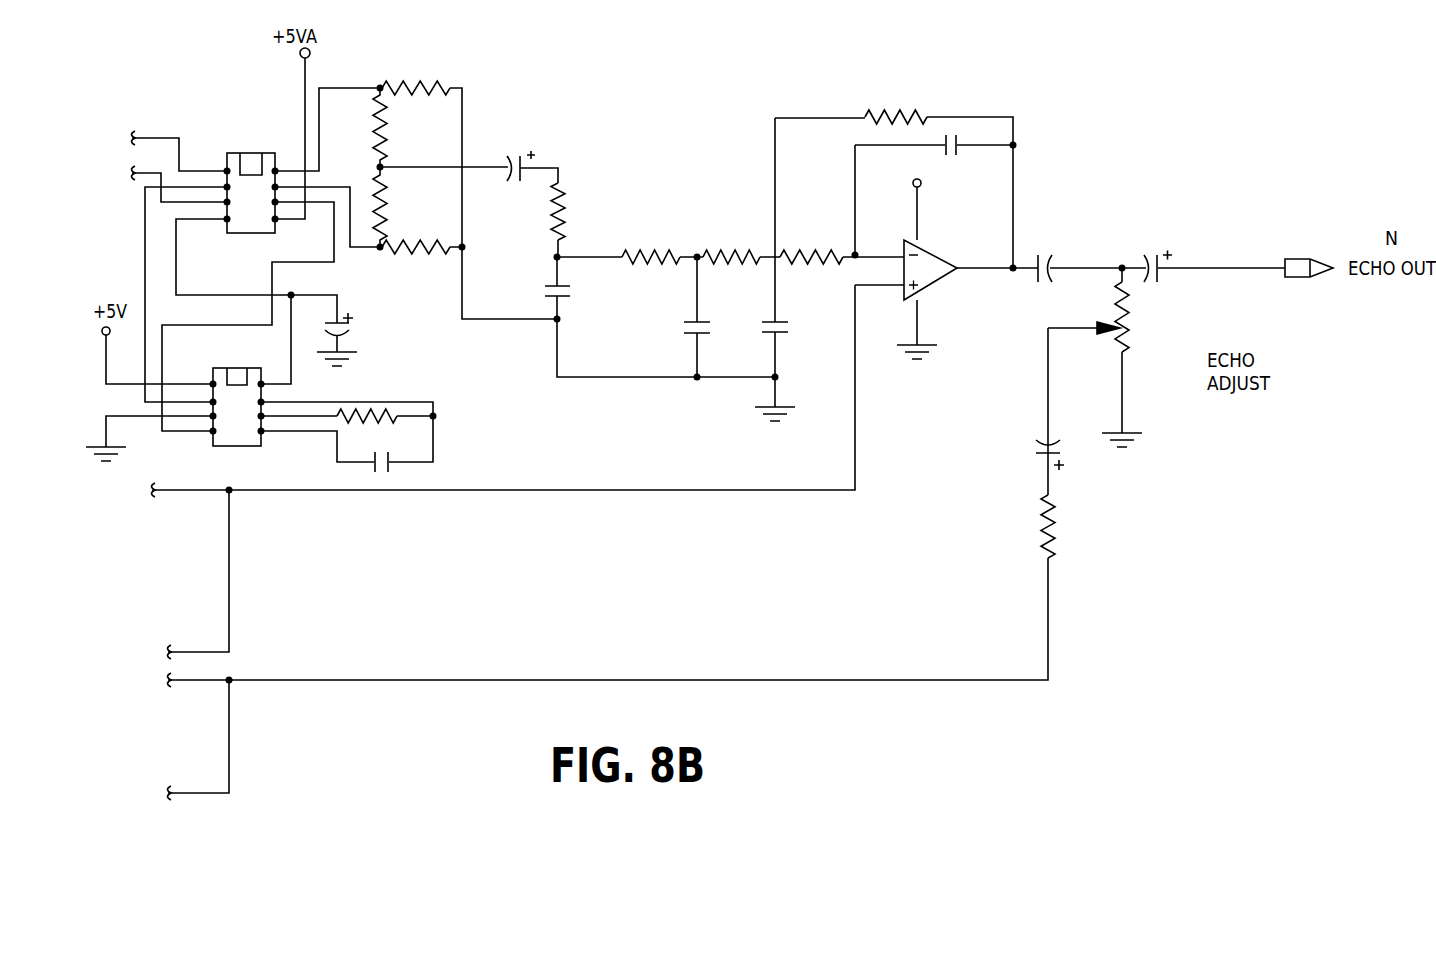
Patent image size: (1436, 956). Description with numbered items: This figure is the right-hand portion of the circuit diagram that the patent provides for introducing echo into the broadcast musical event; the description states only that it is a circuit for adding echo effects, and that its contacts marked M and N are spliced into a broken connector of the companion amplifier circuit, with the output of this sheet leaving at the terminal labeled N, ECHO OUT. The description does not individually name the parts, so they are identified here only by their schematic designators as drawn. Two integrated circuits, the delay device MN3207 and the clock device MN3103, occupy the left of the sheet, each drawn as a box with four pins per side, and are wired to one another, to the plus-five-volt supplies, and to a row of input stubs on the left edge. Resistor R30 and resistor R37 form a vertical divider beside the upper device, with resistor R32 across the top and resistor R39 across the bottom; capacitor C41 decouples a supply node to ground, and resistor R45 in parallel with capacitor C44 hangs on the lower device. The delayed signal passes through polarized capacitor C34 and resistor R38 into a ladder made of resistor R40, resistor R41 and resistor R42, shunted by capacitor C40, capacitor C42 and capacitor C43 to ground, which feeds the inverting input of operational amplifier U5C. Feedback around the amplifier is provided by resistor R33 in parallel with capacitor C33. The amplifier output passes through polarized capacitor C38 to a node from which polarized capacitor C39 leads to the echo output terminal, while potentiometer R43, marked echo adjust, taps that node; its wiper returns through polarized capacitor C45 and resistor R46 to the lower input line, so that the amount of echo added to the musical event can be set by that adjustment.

The bucket brigade delay IC MN3207 is at (249, 181).
The clock driver IC MN3103 is at (238, 420).
The resistor 5.6K R30 is at (401, 127).
The resistor 100K R32 is at (434, 78).
The resistor 120K R33 is at (896, 119).
The resistor 5.6K R37 is at (401, 207).
The resistor 43K R38 is at (576, 211).
The resistor 100K R39 is at (416, 271).
The resistor 39K R40 is at (651, 260).
The resistor 39K R41 is at (738, 258).
The resistor 33K R42 is at (811, 260).
The echo adjust potentiometer 20K R43 is at (1142, 320).
The resistor 200K R45 is at (378, 428).
The resistor 120K R46 is at (1023, 528).
The capacitor 220pF C33 is at (941, 146).
The capacitor 3.3uF16v C34 is at (508, 168).
The capacitor 3.3uF16v C38 is at (1058, 270).
The capacitor 3.3uF16v C39 is at (1201, 253).
The capacitor 1800pF C40 is at (588, 314).
The capacitor 3.3uF16v C41 is at (377, 339).
The capacitor 220pF C42 is at (718, 303).
The capacitor 2700pF C43 is at (802, 349).
The capacitor 100pF C44 is at (391, 469).
The capacitor 3.3uF16v C45 is at (1006, 455).
The operational amplifier MC34004 U5C is at (936, 247).